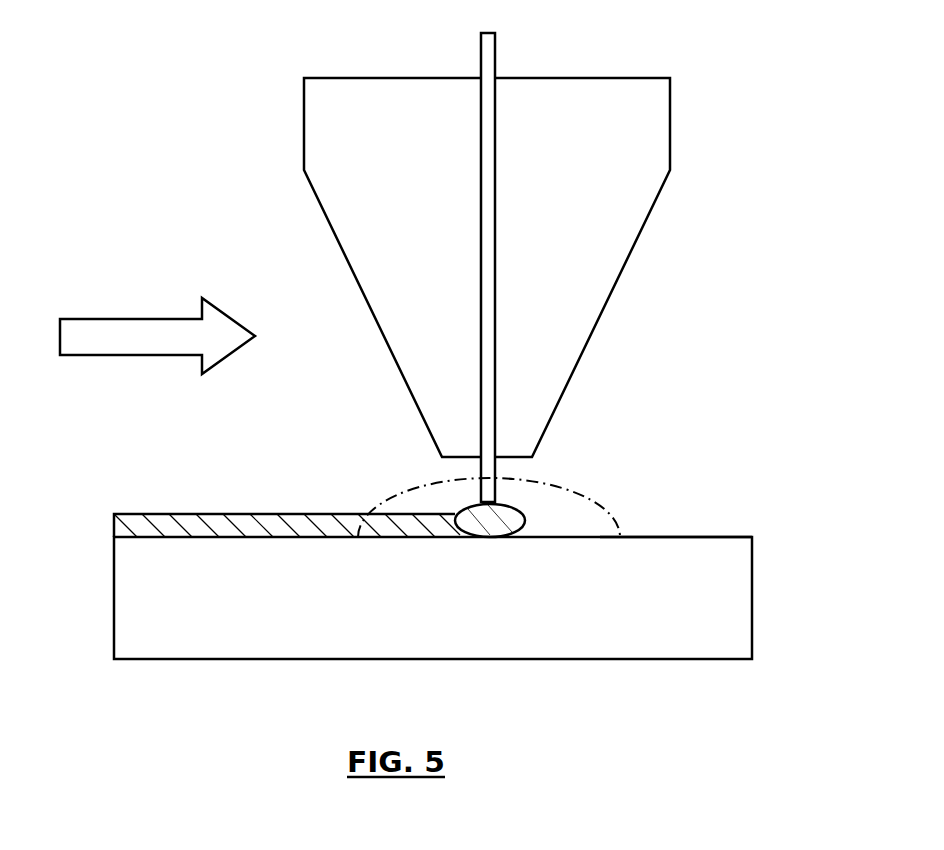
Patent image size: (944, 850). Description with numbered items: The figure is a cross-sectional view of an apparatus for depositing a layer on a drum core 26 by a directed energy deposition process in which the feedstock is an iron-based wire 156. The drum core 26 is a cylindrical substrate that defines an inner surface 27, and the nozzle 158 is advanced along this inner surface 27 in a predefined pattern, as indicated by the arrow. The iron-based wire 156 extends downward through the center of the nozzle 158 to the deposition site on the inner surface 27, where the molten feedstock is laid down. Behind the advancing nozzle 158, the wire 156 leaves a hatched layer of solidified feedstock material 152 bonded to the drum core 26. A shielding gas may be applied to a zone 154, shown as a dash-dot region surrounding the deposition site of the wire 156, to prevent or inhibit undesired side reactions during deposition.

The drum core 26 is at (114, 635).
The inner surface 27 is at (722, 537).
The layer of solidified feedstock material 152 is at (114, 529).
The zone 154 is at (592, 500).
The iron-based wire 156 is at (495, 55).
The nozzle 158 is at (670, 105).